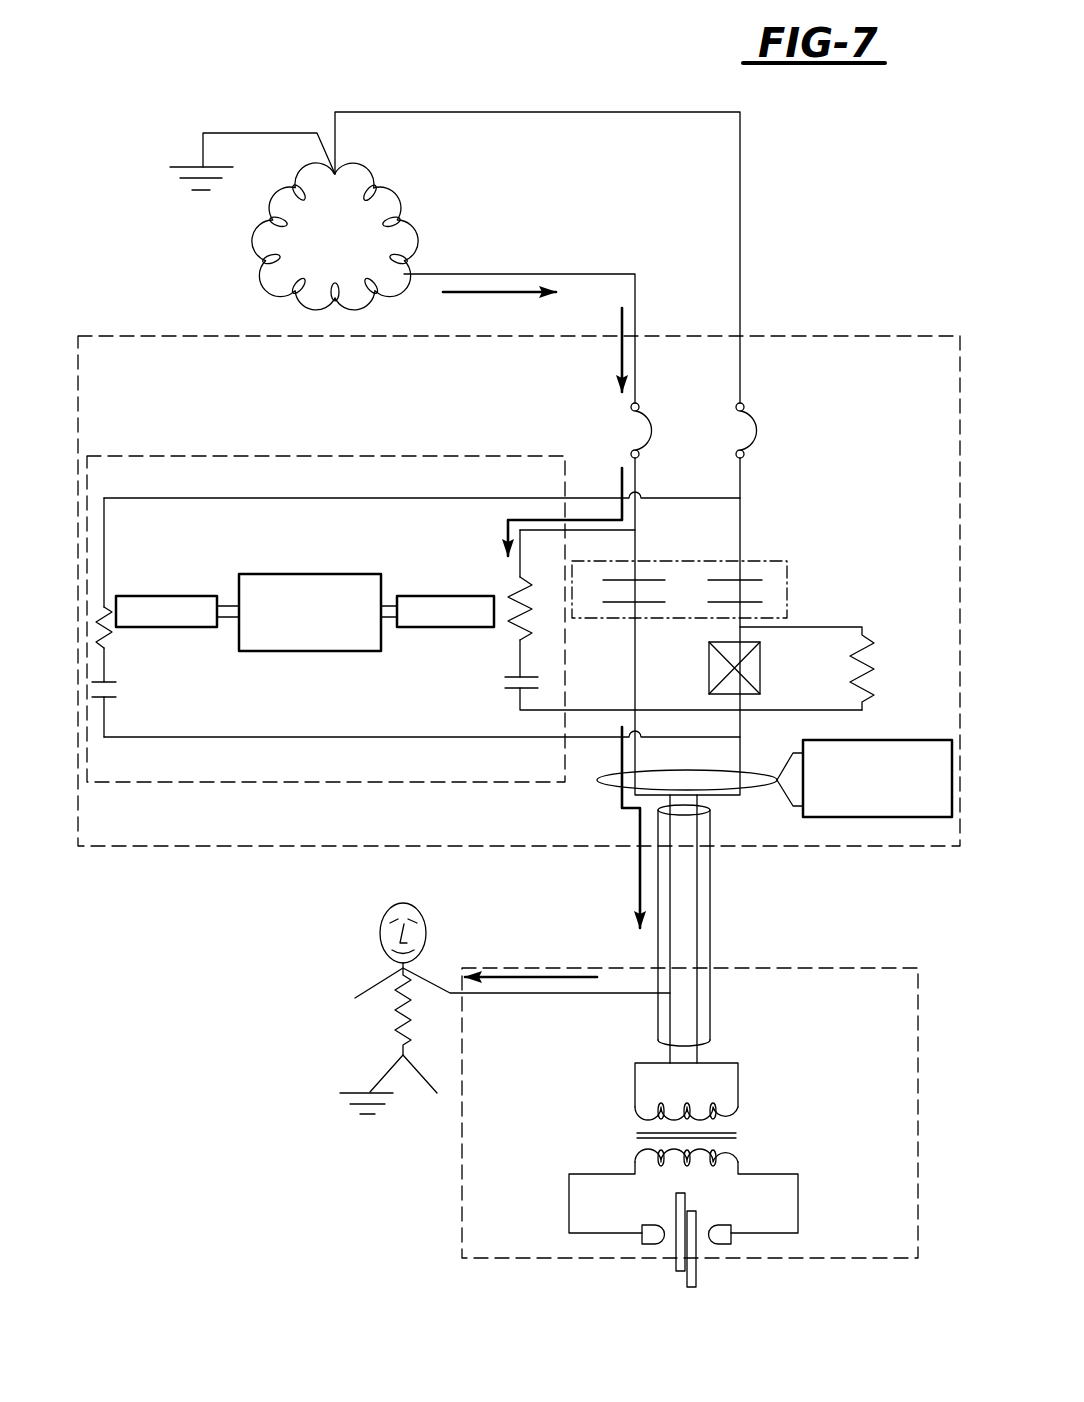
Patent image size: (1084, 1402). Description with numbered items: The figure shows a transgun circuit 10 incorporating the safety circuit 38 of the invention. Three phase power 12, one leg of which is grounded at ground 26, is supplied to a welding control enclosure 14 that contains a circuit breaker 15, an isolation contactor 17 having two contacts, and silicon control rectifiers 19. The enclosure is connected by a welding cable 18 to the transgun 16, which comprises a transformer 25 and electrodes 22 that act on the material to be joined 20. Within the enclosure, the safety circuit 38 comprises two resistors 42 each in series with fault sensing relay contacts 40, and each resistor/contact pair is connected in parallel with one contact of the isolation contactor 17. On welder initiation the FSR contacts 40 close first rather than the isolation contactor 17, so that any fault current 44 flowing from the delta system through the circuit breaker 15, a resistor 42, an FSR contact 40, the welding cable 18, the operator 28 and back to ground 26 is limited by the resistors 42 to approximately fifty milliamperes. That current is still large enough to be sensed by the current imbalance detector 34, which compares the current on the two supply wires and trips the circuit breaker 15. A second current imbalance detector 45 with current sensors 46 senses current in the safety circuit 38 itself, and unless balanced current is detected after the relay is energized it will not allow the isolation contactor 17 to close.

The transgun circuit 10 is at (372, 93).
The power 12 is at (397, 197).
The welding control enclosure 14 is at (898, 326).
The circuit breaker 15 is at (770, 420).
The transgun 16 is at (915, 1026).
The isolation contactor 17 is at (794, 587).
The welding cable 18 is at (717, 961).
The silicon control rectifiers 19 is at (762, 679).
The material to be joined 20 is at (704, 1274).
The electrodes 22 is at (634, 1240).
The transformer 25 is at (618, 1133).
The ground 26 is at (174, 182).
The operator 28 is at (378, 966).
The current imbalance detector 34 is at (892, 817).
The safety circuit 38 is at (191, 450).
The fault sensing relay contacts 40 is at (114, 693).
The resistors 42 is at (112, 636).
The fault current 44 is at (470, 299).
The current imbalance detector 45 is at (300, 570).
The current sensors 46 is at (178, 581).